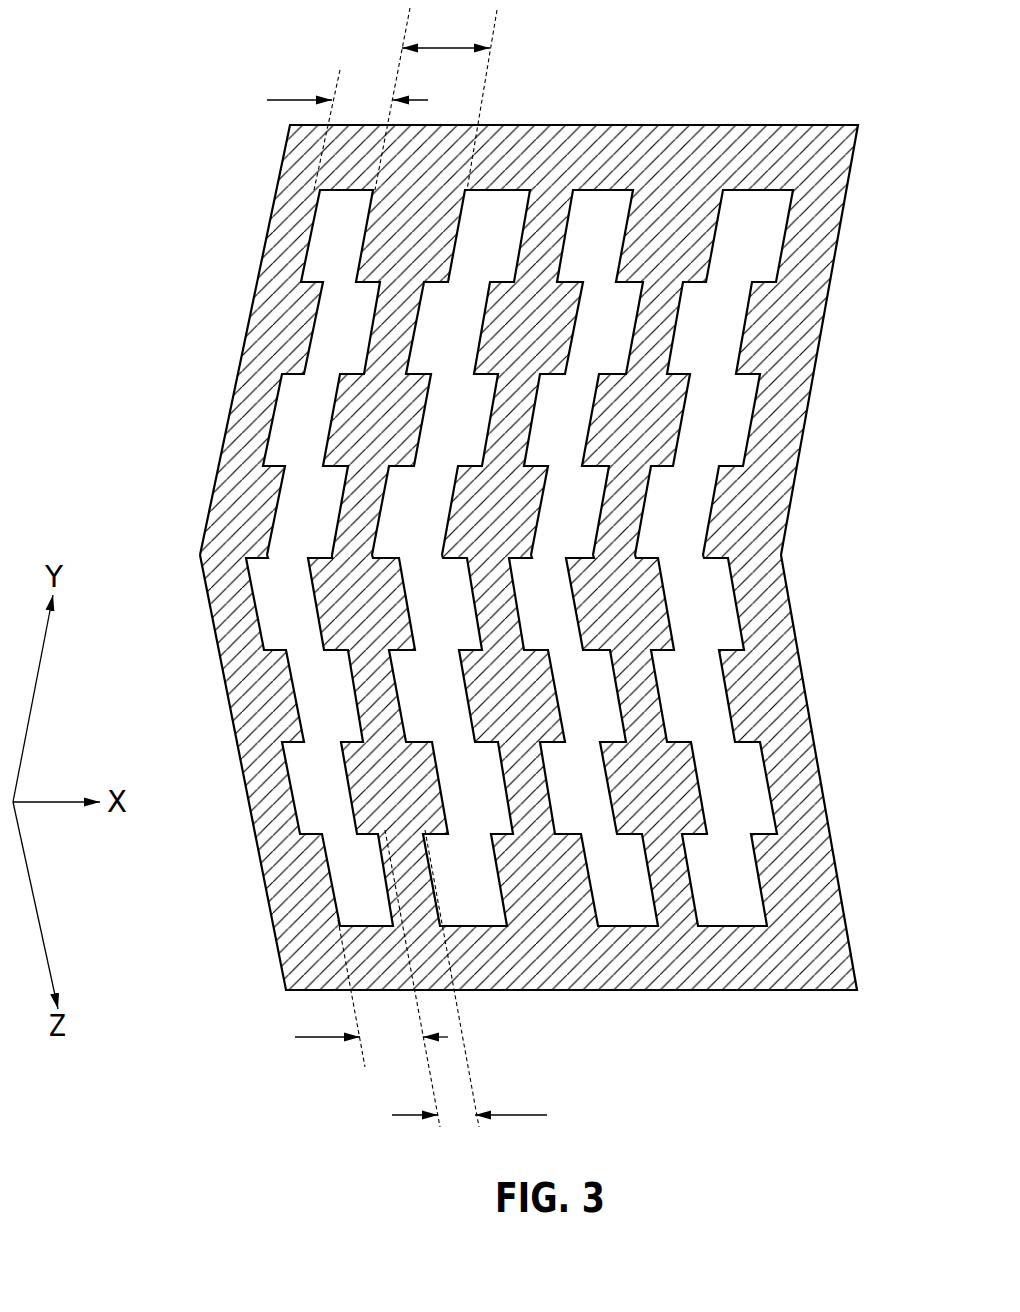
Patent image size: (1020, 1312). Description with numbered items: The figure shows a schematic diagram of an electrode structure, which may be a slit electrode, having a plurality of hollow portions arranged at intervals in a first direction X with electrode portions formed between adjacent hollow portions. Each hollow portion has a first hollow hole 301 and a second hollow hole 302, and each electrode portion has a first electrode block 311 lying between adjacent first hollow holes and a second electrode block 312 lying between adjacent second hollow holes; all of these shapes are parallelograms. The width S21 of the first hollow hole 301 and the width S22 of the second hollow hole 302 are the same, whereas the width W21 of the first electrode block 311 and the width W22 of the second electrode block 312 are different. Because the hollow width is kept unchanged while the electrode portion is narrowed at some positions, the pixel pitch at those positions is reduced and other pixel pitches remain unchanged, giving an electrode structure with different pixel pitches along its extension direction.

The first hollow hole 301 is at (320, 235).
The first electrode block 311 is at (385, 247).
The second hollow hole 302 is at (345, 860).
The second electrode block 312 is at (413, 892).
The width of the first hollow hole S21 is at (347, 99).
The width of the first electrode block W21 is at (449, 100).
The width of the second hollow hole S22 is at (371, 978).
The width of the second electrode block W22 is at (469, 978).